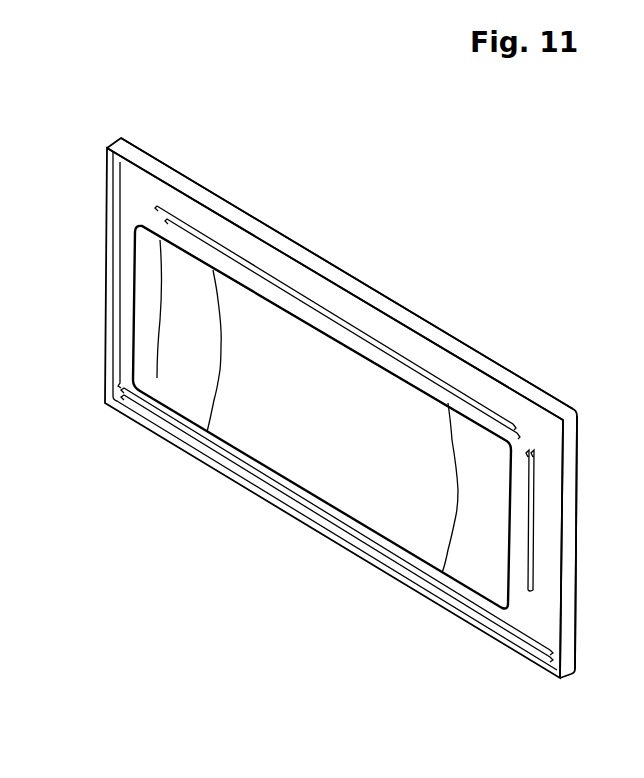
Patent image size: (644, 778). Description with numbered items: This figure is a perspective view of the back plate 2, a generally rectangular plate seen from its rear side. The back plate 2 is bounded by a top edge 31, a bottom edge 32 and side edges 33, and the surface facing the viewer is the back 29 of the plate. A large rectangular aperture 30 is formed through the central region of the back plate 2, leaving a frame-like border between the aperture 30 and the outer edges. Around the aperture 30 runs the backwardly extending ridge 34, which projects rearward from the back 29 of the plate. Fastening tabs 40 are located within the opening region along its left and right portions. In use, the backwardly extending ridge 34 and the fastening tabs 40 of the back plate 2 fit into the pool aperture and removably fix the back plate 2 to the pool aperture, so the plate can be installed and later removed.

The back plate 2 is at (341, 408).
The back 29 is at (337, 322).
The aperture 30 is at (322, 417).
The top edge 31 is at (385, 301).
The bottom edge 32 is at (286, 517).
The side edges 33 is at (570, 578).
The backwardly extending ridge 34 is at (382, 376).
The fastening tabs 40 is at (220, 362).